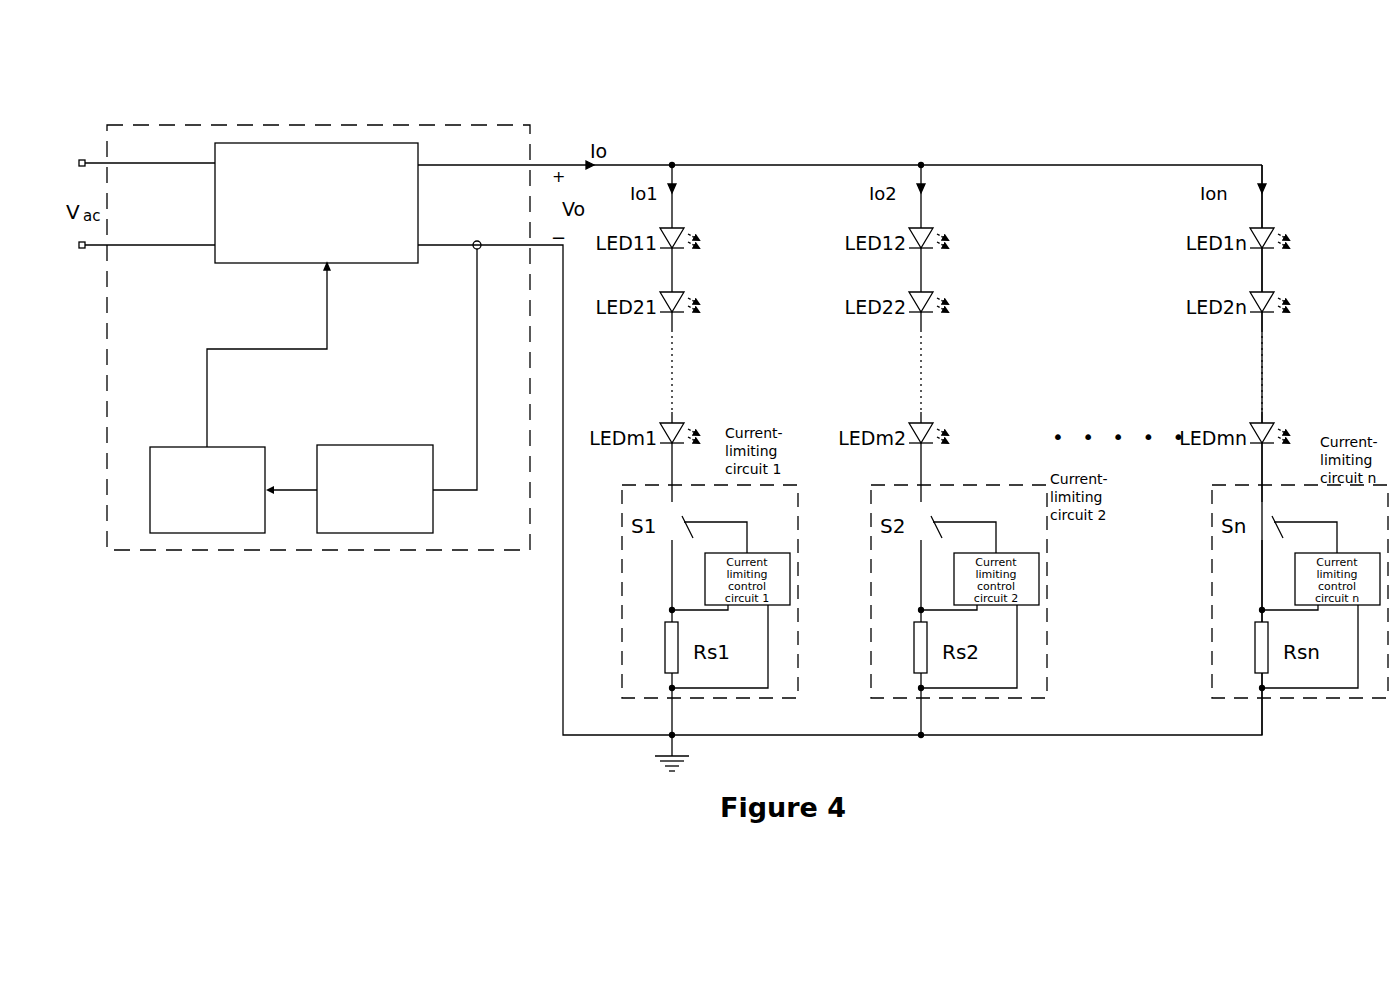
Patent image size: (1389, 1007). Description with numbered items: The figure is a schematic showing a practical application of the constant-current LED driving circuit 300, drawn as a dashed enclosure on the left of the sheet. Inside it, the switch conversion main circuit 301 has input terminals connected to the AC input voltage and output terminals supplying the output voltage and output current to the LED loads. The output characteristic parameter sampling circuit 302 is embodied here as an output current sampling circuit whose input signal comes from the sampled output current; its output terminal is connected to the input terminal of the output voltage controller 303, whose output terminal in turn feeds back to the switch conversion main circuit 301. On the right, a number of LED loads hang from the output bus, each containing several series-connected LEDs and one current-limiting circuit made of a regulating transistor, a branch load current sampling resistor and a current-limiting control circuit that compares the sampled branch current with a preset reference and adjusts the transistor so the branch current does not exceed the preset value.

The constant-current LED driving circuit 300 is at (448, 125).
The switch conversion main circuit 301 is at (293, 143).
The output characteristic parameter sampling circuit 302 is at (362, 533).
The output voltage controller 303 is at (200, 533).